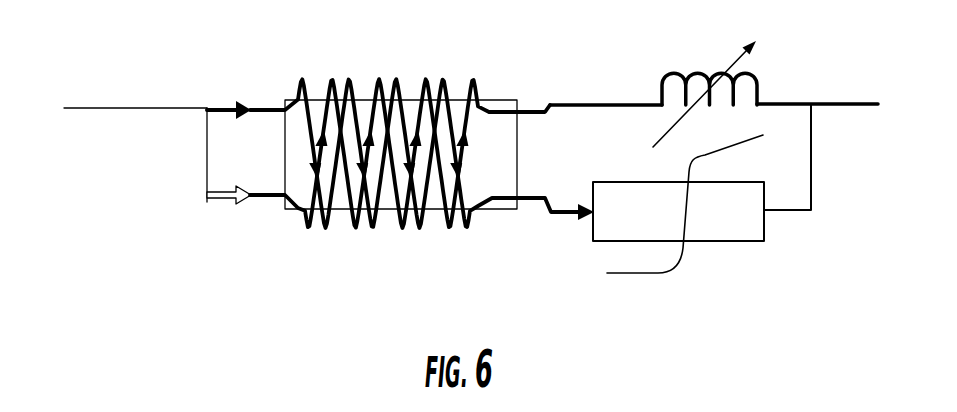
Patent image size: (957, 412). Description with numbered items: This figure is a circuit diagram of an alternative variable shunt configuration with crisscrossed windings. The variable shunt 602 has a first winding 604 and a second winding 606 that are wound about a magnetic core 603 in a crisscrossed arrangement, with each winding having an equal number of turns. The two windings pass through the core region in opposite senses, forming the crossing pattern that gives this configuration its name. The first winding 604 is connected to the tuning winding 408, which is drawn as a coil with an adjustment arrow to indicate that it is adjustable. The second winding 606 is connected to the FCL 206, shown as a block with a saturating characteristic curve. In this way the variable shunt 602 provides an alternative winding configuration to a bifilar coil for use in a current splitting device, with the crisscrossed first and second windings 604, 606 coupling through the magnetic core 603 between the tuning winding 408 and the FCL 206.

The variable shunt 602 is at (422, 130).
The magnetic core 603 is at (364, 97).
The first winding 604 is at (298, 203).
The second winding 606 is at (302, 84).
The tuning winding 408 is at (757, 82).
The FCL 206 is at (727, 241).